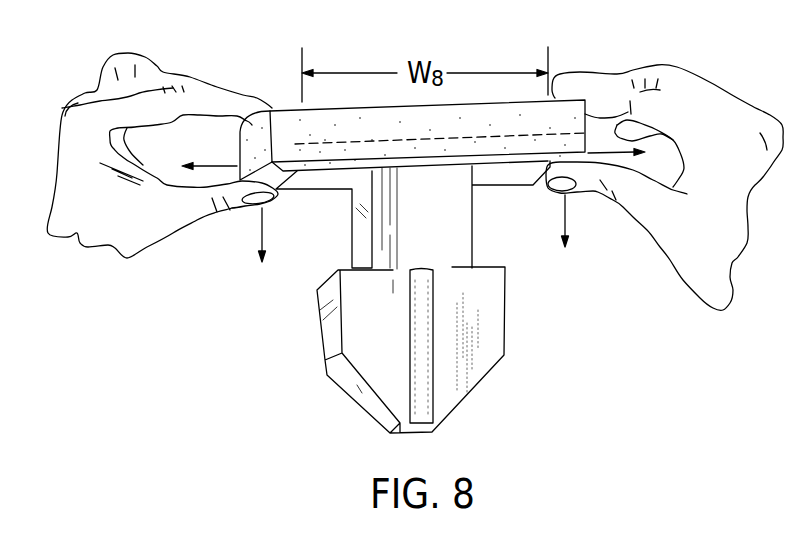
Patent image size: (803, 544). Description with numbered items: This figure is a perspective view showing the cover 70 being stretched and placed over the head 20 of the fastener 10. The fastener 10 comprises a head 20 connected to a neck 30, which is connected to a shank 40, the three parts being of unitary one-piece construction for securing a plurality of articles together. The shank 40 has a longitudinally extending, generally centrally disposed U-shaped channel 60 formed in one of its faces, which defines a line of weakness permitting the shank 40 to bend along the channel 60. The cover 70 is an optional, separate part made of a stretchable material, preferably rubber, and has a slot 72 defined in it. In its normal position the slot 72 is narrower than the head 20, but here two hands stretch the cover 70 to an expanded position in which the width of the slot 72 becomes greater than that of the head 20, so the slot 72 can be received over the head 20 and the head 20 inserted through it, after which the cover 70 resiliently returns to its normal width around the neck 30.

The fastener 10 is at (406, 227).
The head 20 is at (320, 192).
The neck 30 is at (458, 239).
The shank 40 is at (372, 348).
The U-shaped channel 60 is at (433, 357).
The cover 70 is at (284, 124).
The slot 72 is at (292, 160).